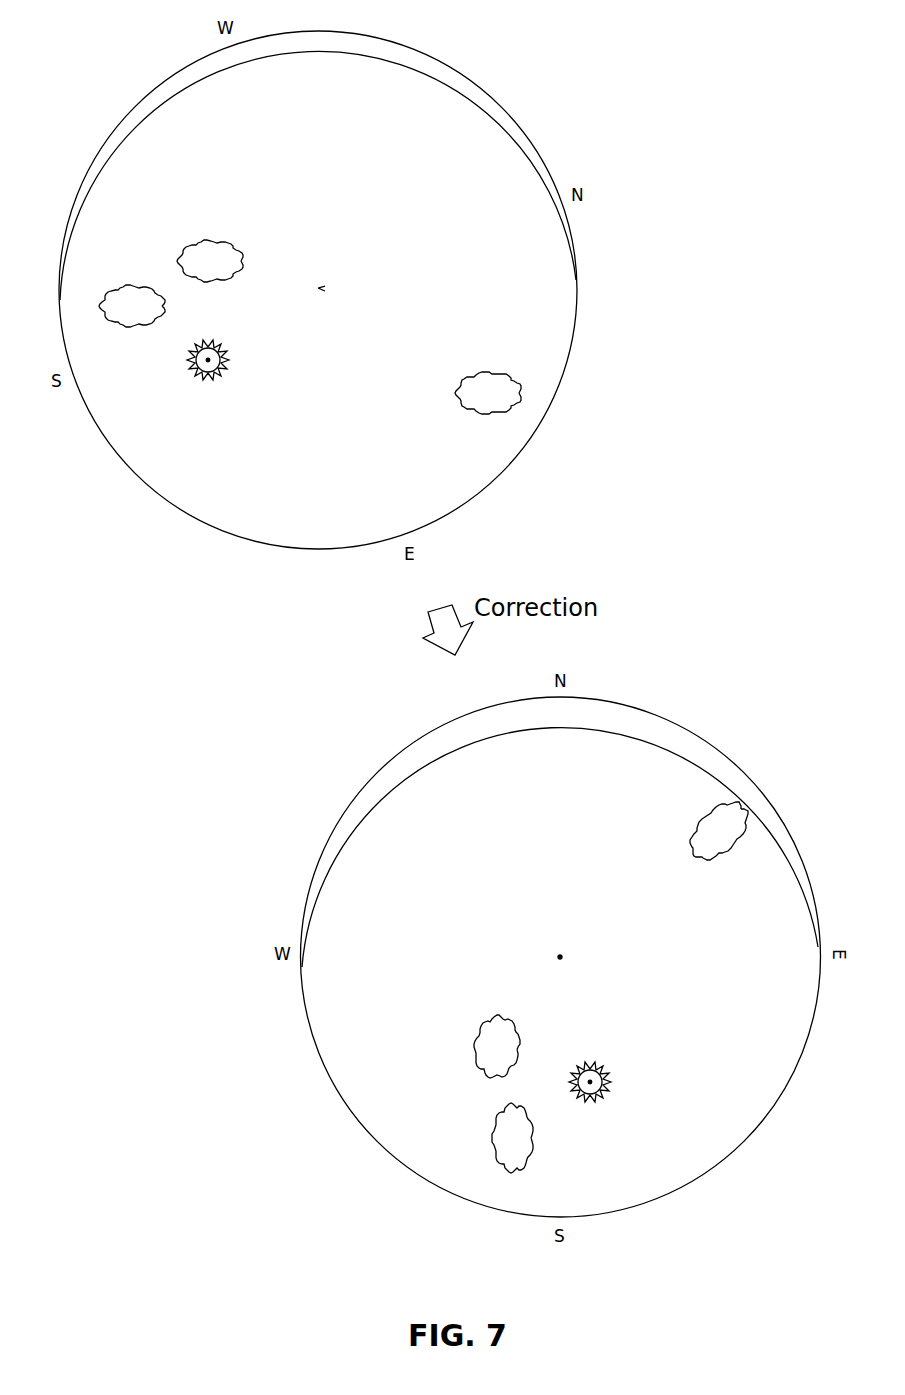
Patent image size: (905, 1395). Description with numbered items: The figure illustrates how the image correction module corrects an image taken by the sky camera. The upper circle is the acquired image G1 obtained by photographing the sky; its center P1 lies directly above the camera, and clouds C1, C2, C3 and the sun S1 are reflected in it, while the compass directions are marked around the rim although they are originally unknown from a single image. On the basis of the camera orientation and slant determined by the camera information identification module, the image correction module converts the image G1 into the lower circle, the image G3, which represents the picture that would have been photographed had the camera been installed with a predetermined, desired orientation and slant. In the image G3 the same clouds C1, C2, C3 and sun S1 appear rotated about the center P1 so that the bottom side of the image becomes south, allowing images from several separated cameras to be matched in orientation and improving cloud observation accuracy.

The image G1 is at (456, 30).
The corrected image G3 is at (682, 696).
The center of the image P1 is at (320, 288).
The cloud C1 is at (165, 298).
The cloud C2 is at (208, 240).
The cloud C3 is at (492, 372).
The sun S1 is at (199, 366).